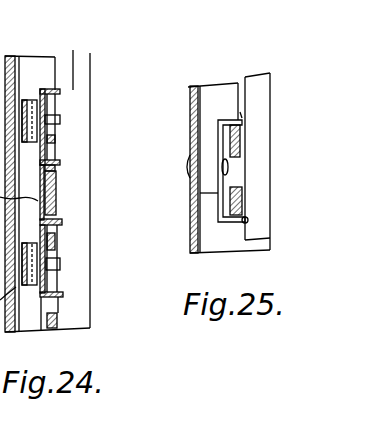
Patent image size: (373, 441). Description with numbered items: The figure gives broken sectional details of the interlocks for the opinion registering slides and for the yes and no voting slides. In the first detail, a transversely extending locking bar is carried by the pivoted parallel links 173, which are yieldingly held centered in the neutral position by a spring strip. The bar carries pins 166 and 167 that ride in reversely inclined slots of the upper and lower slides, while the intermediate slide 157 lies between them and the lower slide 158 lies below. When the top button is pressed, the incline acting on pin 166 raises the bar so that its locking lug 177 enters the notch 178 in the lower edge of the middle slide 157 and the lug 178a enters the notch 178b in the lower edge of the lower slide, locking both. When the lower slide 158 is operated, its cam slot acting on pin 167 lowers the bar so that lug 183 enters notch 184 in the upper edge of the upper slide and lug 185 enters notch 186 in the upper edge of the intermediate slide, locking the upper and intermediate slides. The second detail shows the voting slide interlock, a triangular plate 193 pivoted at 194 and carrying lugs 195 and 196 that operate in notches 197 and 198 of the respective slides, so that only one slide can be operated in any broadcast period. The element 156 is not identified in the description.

In FIG. 24, the parallel links 173 is at (25, 100).
In FIG. 24, the lug 183 is at (50, 92).
In FIG. 24, the notch 184 is at (50, 103).
In FIG. 24, the pin 166 is at (52, 118).
In FIG. 24, the spacer 156 is at (55, 137).
In FIG. 24, the lug 185 is at (55, 152).
In FIG. 24, the notch 186 is at (55, 165).
In FIG. 24, the intermediate slide 157 is at (55, 187).
In FIG. 24, the notch 178 is at (55, 215).
In FIG. 24, the locking lug 177 is at (55, 225).
In FIG. 24, the lower slide 158 is at (55, 247).
In FIG. 24, the pin 167 is at (55, 265).
In FIG. 24, the notch 178b is at (55, 285).
In FIG. 24, the lug 178a is at (55, 295).
In FIG. 25, the triangular plate 193 is at (217, 137).
In FIG. 25, the lug 195 is at (246, 122).
In FIG. 25, the notch 197 is at (242, 116).
In FIG. 25, the pivot 194 is at (228, 168).
In FIG. 25, the lug 196 is at (242, 212).
In FIG. 25, the notch 198 is at (247, 224).